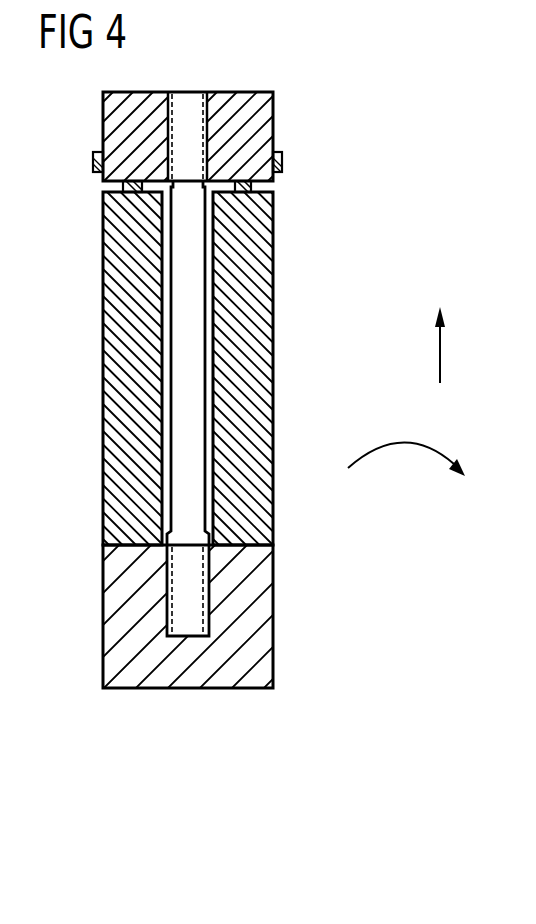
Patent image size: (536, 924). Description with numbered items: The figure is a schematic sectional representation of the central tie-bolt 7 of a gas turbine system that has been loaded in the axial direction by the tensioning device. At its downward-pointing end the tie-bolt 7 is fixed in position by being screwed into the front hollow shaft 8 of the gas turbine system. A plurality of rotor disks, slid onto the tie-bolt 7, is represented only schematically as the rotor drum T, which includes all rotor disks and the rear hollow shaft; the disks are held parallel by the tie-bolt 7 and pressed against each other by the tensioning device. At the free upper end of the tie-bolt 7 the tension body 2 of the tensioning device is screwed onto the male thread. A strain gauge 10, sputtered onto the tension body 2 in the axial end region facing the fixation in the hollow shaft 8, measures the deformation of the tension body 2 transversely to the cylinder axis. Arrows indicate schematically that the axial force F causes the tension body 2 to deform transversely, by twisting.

The tension body 2 is at (263, 118).
The strain gauge 10 is at (282, 170).
The rotor drum T is at (115, 287).
The central tie-bolt 7 is at (190, 393).
The front hollow shaft 8 is at (263, 626).
The force direction F is at (438, 358).